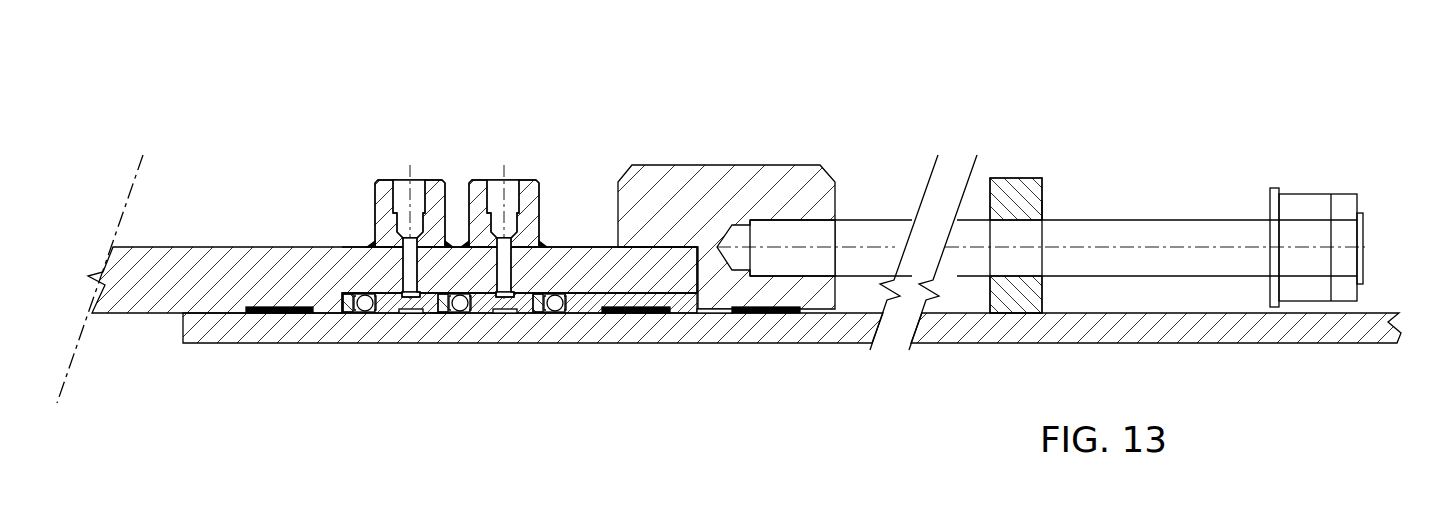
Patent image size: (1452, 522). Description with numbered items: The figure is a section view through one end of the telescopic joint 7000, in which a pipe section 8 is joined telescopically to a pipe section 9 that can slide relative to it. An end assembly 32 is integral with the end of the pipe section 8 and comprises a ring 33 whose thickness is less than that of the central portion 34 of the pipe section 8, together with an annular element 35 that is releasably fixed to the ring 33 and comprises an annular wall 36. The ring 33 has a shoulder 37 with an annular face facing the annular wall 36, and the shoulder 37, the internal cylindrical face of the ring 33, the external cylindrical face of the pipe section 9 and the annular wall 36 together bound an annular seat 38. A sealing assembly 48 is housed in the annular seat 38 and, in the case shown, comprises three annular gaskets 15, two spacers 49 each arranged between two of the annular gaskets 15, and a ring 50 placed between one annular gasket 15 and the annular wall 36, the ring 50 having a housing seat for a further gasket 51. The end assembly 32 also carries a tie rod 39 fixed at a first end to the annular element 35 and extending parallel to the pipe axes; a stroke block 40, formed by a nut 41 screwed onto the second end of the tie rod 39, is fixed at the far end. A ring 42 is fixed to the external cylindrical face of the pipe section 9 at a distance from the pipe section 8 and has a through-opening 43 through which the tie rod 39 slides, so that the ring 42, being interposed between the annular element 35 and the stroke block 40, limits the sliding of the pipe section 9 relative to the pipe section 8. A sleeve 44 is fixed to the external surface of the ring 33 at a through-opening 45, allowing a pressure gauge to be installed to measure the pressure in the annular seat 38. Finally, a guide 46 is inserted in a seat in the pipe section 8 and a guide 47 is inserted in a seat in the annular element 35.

The pipe section 8 is at (150, 265).
The pipe section 9 is at (1300, 320).
The annular gasket 15 is at (368, 318).
The end assembly 32 is at (523, 248).
The ring 33 is at (568, 262).
The central portion 34 is at (122, 293).
The annular element 35 is at (750, 192).
The annular wall 36 is at (712, 312).
The shoulder 37 is at (343, 302).
The annular seat 38 is at (442, 324).
The tie rod 39 is at (1143, 235).
The stroke block 40 is at (1331, 186).
The nut 41 is at (1313, 287).
The ring 42 is at (1012, 195).
The through-opening 43 is at (1048, 212).
The sleeve 44 is at (387, 207).
The through-opening 45 is at (393, 262).
The guide 46 is at (268, 316).
The guide 47 is at (762, 316).
The sealing assembly 48 is at (412, 326).
The spacer 49 is at (398, 318).
The ring 50 is at (590, 318).
The gasket 51 is at (640, 318).
The telescopic joint 7000 is at (1073, 177).